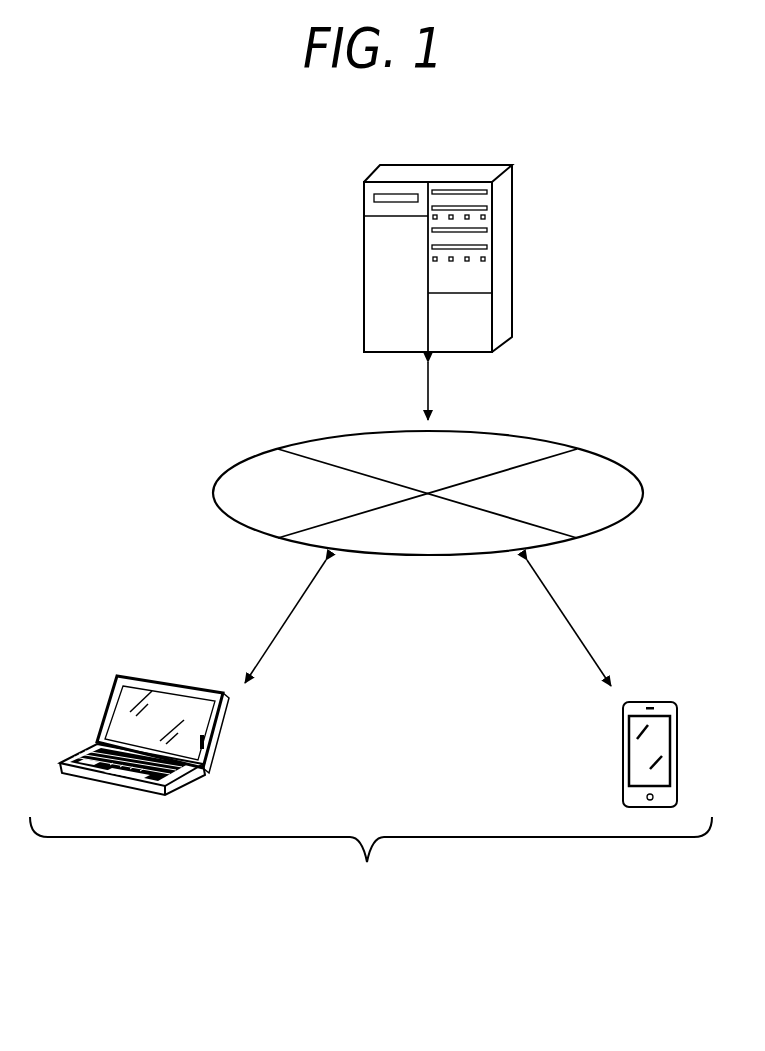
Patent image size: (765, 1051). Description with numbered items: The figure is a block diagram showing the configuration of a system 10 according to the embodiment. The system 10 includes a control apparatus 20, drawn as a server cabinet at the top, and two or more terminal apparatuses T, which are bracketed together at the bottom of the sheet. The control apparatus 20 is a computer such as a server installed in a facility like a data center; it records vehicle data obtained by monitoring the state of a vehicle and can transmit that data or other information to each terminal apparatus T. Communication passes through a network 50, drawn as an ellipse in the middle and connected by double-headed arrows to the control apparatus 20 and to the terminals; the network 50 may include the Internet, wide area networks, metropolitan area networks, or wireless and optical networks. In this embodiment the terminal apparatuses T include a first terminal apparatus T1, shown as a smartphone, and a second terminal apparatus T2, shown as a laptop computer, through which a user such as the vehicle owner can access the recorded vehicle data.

The system 10 is at (156, 349).
The control apparatus 20 is at (364, 250).
The network 50 is at (607, 454).
The first terminal apparatus T1 is at (623, 750).
The second terminal apparatus T2 is at (214, 732).
The terminal apparatus T is at (371, 856).